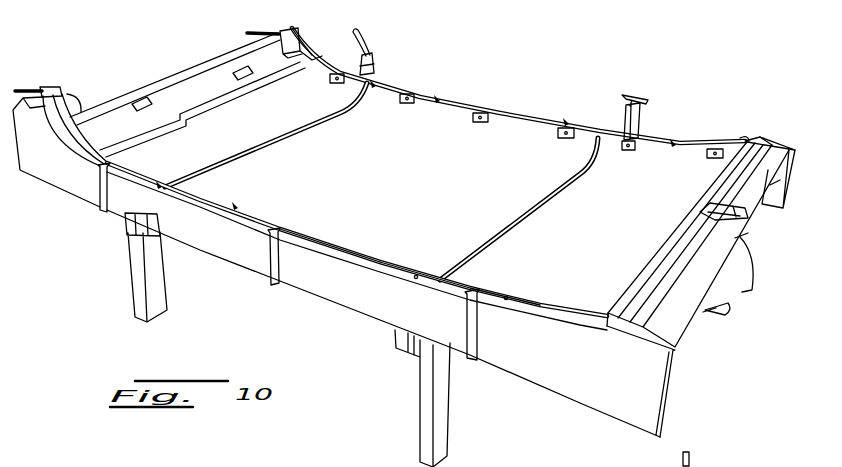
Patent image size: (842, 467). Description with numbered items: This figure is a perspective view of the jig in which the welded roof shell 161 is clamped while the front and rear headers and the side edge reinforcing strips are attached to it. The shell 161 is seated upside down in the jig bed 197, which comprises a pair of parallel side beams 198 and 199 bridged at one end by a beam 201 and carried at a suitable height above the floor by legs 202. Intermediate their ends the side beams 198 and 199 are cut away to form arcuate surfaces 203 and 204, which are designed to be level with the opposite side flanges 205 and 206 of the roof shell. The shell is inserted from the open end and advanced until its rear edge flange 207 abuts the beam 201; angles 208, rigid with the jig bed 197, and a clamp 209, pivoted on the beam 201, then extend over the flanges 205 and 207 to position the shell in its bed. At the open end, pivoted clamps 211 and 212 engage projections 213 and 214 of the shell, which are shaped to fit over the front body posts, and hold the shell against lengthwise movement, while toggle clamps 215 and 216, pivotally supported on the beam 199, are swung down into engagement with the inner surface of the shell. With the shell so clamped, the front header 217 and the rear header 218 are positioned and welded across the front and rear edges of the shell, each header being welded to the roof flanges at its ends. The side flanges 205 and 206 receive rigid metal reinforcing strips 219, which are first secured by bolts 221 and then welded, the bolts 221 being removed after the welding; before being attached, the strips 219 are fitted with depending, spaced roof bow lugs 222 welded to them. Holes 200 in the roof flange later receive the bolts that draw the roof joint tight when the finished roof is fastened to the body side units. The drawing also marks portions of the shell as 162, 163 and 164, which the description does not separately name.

The shell 161 is at (524, 130).
The top panel 162 is at (610, 229).
The top panel 163 is at (462, 200).
The top panel 164 is at (250, 135).
The jig bed 197 is at (338, 308).
The side beam 198 is at (600, 397).
The side beam 199 is at (779, 210).
The holes 200 is at (241, 208).
The beam 201 is at (727, 293).
The legs 202 is at (443, 433).
The arcuate surface 203 is at (415, 278).
The arcuate surface 204 is at (307, 52).
The side flange 205 is at (327, 248).
The side flange 206 is at (470, 107).
The rear edge flange 207 is at (680, 262).
The angles 208 is at (474, 346).
The clamp 209 is at (703, 207).
The pivoted clamp 211 is at (42, 88).
The pivoted clamp 212 is at (251, 30).
The projection 213 is at (75, 105).
The projection 214 is at (296, 28).
The toggle clamp 215 is at (369, 54).
The toggle clamp 216 is at (644, 128).
The front header 217 is at (262, 90).
The rear header 218 is at (710, 188).
The reenforcing strip 219 is at (412, 88).
The bolts 221 is at (442, 100).
The roof bow lugs 222 is at (482, 121).